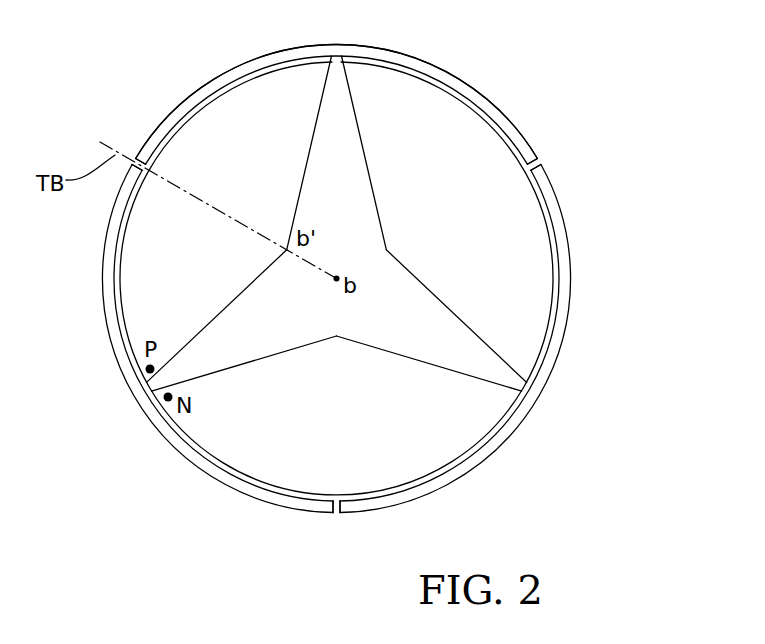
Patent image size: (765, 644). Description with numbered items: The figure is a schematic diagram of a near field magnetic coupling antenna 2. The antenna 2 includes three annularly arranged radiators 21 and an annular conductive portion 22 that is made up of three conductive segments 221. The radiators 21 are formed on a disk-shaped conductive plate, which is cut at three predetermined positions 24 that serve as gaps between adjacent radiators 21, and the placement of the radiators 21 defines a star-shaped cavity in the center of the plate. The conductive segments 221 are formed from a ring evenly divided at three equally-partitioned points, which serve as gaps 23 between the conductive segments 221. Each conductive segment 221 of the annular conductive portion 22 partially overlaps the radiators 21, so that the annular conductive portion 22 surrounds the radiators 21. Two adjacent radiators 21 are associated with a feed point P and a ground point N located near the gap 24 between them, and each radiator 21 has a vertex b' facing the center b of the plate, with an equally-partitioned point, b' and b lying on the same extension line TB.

The near field magnetic coupling antenna 2 is at (337, 87).
The radiator 21 is at (336, 278).
The annular conductive portion 22 is at (387, 278).
The conductive segment 221 is at (520, 143).
The gap 23 is at (139, 163).
The predetermined position 24 is at (337, 56).